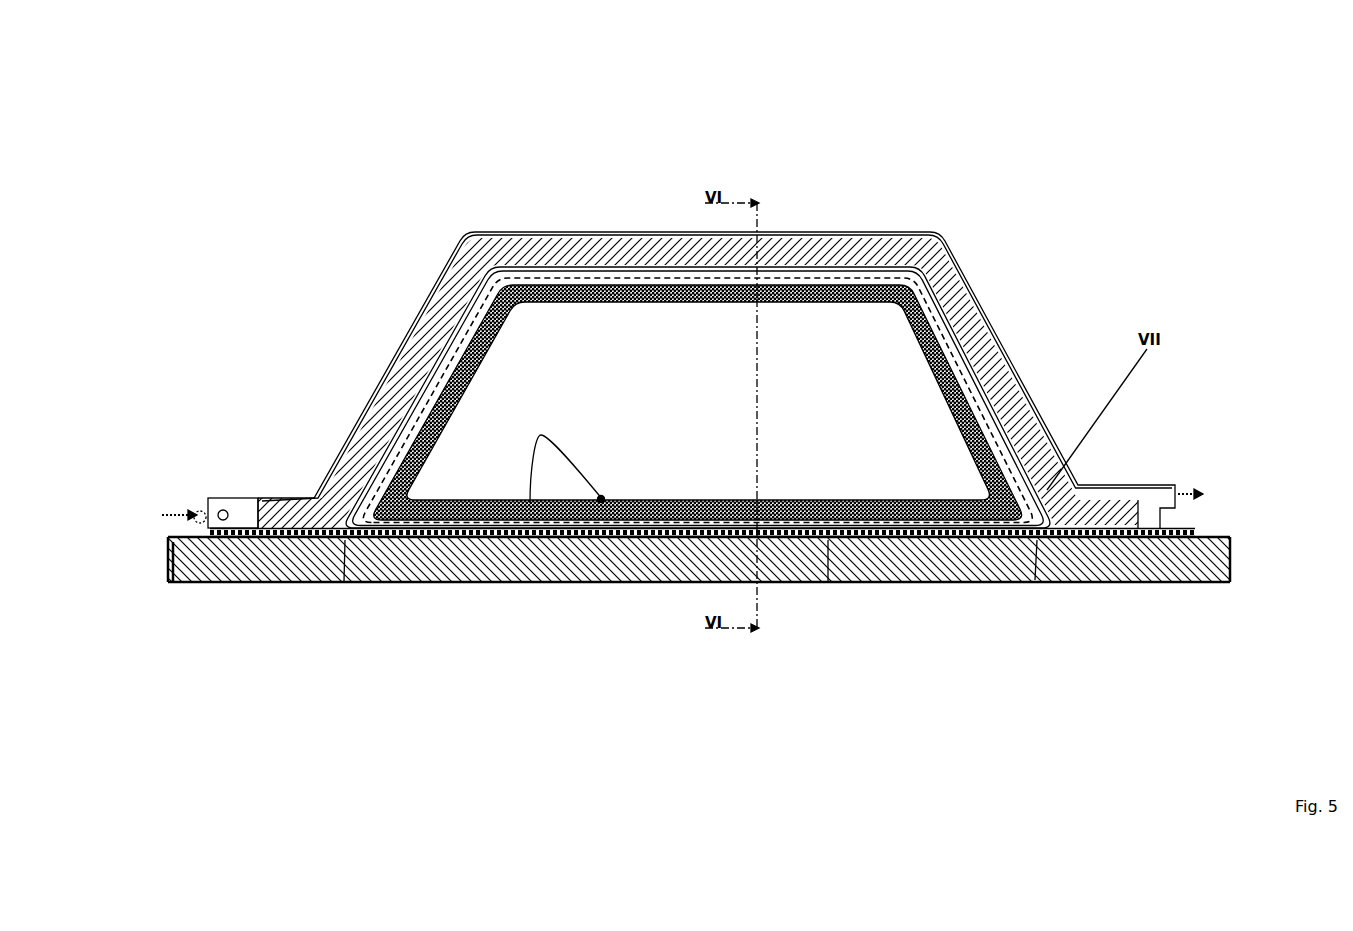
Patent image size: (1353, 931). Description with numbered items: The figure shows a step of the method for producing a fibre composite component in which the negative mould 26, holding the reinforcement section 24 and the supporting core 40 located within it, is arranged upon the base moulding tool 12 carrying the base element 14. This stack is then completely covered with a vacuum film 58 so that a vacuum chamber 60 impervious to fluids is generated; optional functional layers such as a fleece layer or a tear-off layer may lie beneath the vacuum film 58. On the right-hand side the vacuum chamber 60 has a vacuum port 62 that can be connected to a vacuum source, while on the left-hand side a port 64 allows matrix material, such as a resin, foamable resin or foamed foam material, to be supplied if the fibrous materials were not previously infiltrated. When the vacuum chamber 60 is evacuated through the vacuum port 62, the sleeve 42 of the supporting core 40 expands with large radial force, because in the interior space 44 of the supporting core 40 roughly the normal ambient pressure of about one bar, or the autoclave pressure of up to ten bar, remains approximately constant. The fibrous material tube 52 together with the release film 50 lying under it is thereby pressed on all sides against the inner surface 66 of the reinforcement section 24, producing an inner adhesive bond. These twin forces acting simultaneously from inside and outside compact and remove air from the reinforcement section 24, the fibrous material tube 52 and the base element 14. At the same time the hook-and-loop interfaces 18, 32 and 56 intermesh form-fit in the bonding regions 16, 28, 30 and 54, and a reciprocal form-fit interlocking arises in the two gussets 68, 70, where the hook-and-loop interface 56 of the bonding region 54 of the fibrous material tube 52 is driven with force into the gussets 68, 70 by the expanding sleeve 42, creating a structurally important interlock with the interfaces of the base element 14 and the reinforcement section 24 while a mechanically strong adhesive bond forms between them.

The base moulding tool 12 is at (700, 567).
The base element 14 is at (828, 582).
The bonding region 16 is at (230, 553).
The hook-and-loop interface 18 is at (280, 582).
The reinforcement section 24 is at (347, 448).
The negative mould 26 is at (679, 236).
The bonding region 28 is at (1182, 580).
The bonding region 30 is at (170, 559).
The hook-and-loop interface 32 is at (1135, 582).
The supporting core 40 is at (485, 243).
The sleeve 42 is at (783, 280).
The interior space 44 is at (736, 401).
The release film 50 is at (945, 242).
The fibrous material tube 52 is at (895, 243).
The bonding region 54 is at (530, 503).
The hook-and-loop interface 56 is at (601, 499).
The vacuum film 58 is at (540, 232).
The vacuum chamber 60 is at (456, 248).
The vacuum port 62 is at (1157, 493).
The left-hand side port 64 is at (193, 507).
The inner surface 66 is at (600, 245).
The gusset 68 is at (344, 582).
The gusset 70 is at (1035, 580).